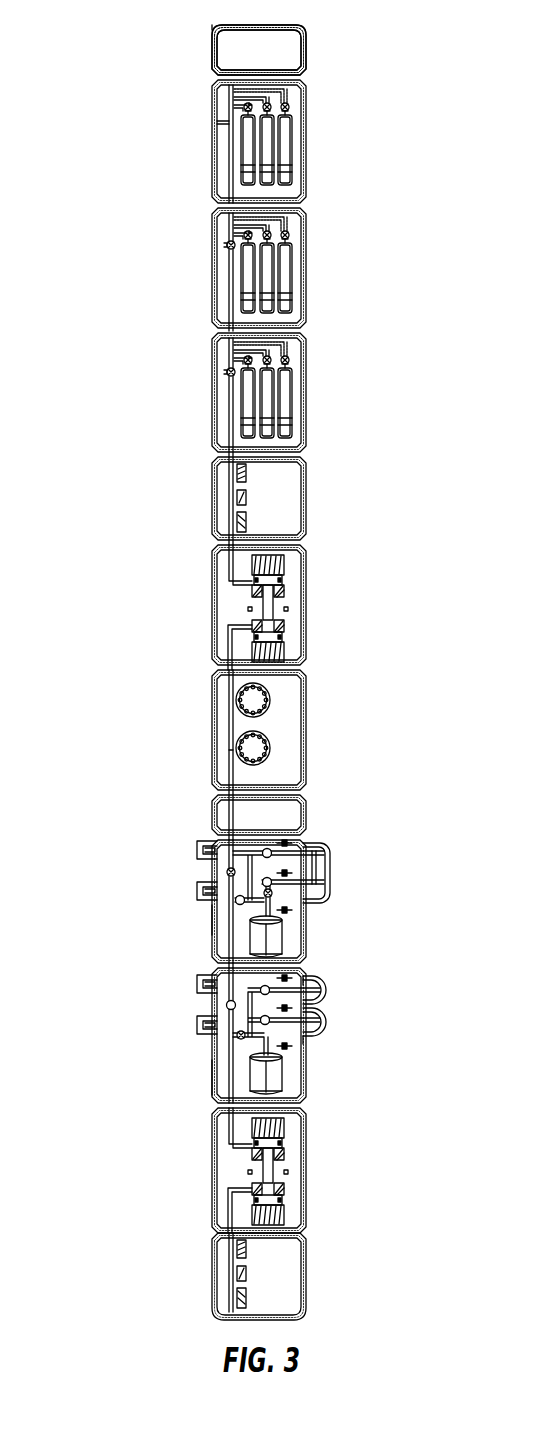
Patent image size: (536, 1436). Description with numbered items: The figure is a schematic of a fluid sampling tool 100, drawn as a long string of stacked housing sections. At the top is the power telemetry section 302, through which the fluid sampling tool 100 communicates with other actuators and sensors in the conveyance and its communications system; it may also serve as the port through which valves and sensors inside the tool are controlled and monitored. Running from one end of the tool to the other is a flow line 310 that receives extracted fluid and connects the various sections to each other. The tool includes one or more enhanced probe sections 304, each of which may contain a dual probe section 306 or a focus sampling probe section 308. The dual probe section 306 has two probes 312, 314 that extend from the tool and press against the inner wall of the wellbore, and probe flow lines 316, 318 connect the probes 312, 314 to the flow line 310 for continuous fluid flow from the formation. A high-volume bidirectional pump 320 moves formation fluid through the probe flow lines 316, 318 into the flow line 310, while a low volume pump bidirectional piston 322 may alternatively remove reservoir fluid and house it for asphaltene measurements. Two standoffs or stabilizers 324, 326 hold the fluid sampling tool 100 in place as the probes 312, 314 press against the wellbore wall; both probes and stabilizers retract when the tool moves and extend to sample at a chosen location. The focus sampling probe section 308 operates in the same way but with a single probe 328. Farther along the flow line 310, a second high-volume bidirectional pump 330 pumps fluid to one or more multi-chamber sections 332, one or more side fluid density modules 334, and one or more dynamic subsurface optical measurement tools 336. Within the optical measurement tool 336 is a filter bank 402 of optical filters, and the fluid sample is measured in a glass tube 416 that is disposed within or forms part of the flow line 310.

The fluid sampling tool 100 is at (158, 42).
The power telemetry section 302 is at (308, 72).
The enhanced probe section 304 is at (214, 912).
The dual probe section 306 is at (319, 1019).
The focus sampling probe section 308 is at (276, 942).
The flow line 310 is at (224, 952).
The probe 312 is at (316, 980).
The probe 314 is at (318, 1032).
The probe flow line 316 is at (310, 974).
The probe flow line 318 is at (306, 1044).
The high-volume bidirectional pump 320 is at (287, 1174).
The low volume pump bidirectional piston 322 is at (283, 942).
The stabilizer 324 is at (197, 850).
The stabilizer 326 is at (197, 895).
The single probe 328 is at (314, 840).
The second high-volume bidirectional pump 330 is at (287, 610).
The multi-chamber section 332 is at (308, 144).
The side fluid density module 334 is at (308, 498).
The dynamic subsurface optical measurement tool 336 is at (308, 752).
The filter bank 402 is at (226, 747).
The glass tube 416 is at (224, 754).